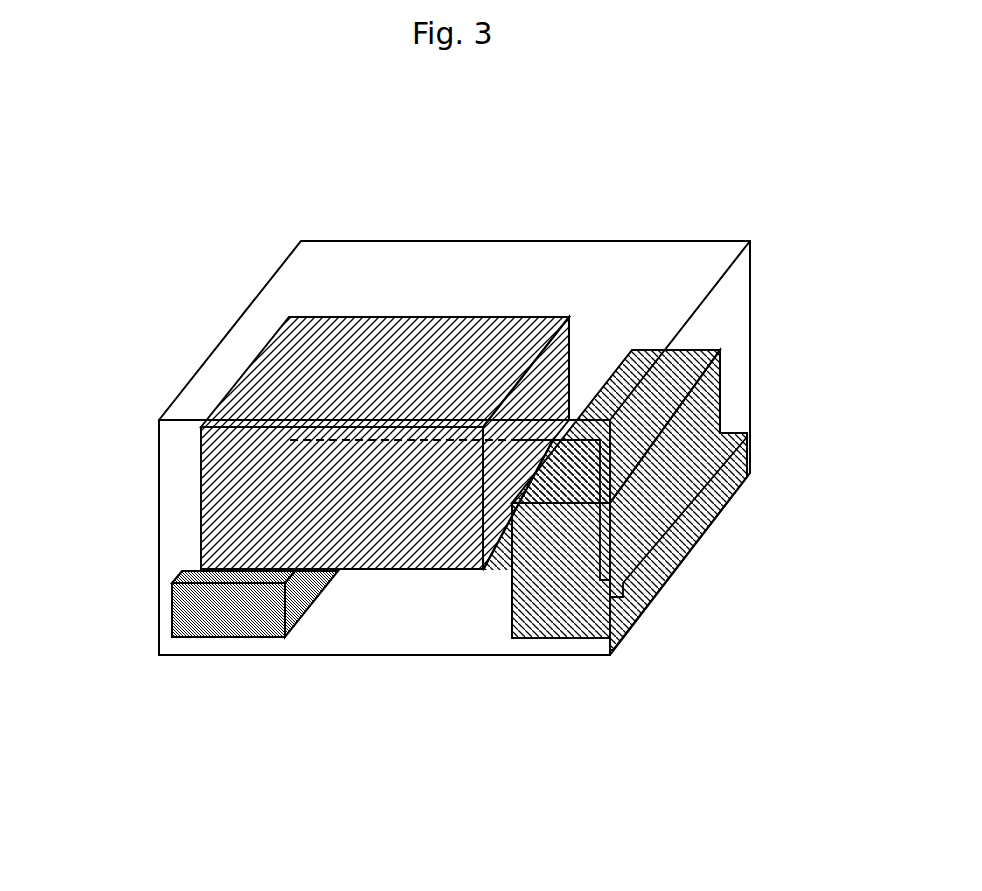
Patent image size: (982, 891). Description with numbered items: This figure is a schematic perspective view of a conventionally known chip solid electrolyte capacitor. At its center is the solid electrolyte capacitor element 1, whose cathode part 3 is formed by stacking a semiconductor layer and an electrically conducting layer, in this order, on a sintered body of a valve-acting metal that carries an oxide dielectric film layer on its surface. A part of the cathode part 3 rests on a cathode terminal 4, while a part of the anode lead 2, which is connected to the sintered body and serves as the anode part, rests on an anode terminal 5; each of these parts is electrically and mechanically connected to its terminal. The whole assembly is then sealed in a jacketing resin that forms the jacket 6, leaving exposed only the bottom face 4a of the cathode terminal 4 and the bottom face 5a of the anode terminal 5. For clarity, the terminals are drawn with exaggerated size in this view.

The solid electrolyte capacitor element 1 is at (268, 456).
The anode lead 2 is at (573, 415).
The cathode part 3 is at (437, 572).
The cathode terminal 4 is at (193, 655).
The bottom face of cathode terminal 4a is at (242, 638).
The anode terminal 5 is at (650, 547).
The bottom face of anode terminal 5a is at (553, 640).
The jacket 6 is at (733, 322).